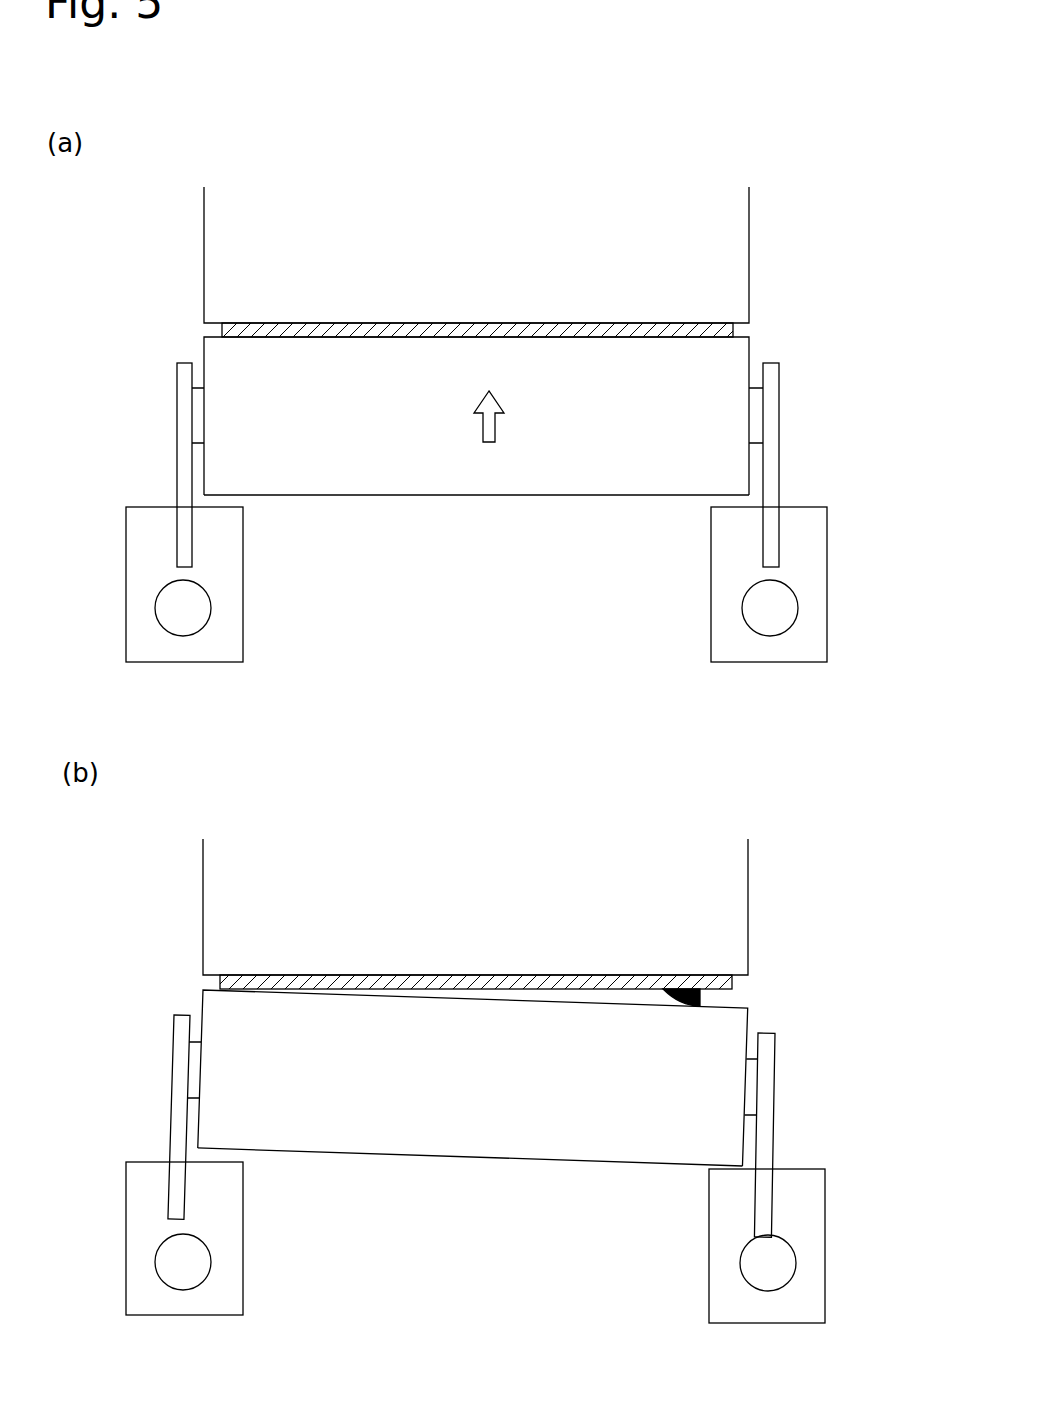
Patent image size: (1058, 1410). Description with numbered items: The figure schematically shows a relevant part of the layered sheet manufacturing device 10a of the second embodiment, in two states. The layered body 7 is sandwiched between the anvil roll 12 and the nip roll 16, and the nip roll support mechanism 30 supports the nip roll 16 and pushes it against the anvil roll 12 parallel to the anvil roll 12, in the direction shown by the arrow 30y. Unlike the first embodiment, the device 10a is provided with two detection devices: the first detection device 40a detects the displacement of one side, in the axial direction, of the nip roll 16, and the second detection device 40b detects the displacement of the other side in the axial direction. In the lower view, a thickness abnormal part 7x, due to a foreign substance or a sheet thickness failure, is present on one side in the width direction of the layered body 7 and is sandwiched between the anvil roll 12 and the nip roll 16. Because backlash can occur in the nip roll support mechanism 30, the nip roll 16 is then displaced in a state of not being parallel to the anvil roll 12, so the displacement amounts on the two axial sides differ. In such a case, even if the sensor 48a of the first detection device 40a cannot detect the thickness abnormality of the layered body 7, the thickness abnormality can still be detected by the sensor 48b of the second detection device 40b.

The layered sheet manufacturing device 10a is at (904, 237).
The anvil roll 12 is at (733, 238).
The layered body 7 is at (633, 323).
The thickness abnormal part 7x is at (690, 1007).
The nip roll support mechanism 30 is at (168, 372).
The arrow 30y is at (495, 428).
The nip roll 16 is at (452, 487).
The first detection device 40a is at (150, 507).
The second detection device 40b is at (797, 507).
The sensor 48a is at (180, 637).
The sensor 48b is at (767, 637).